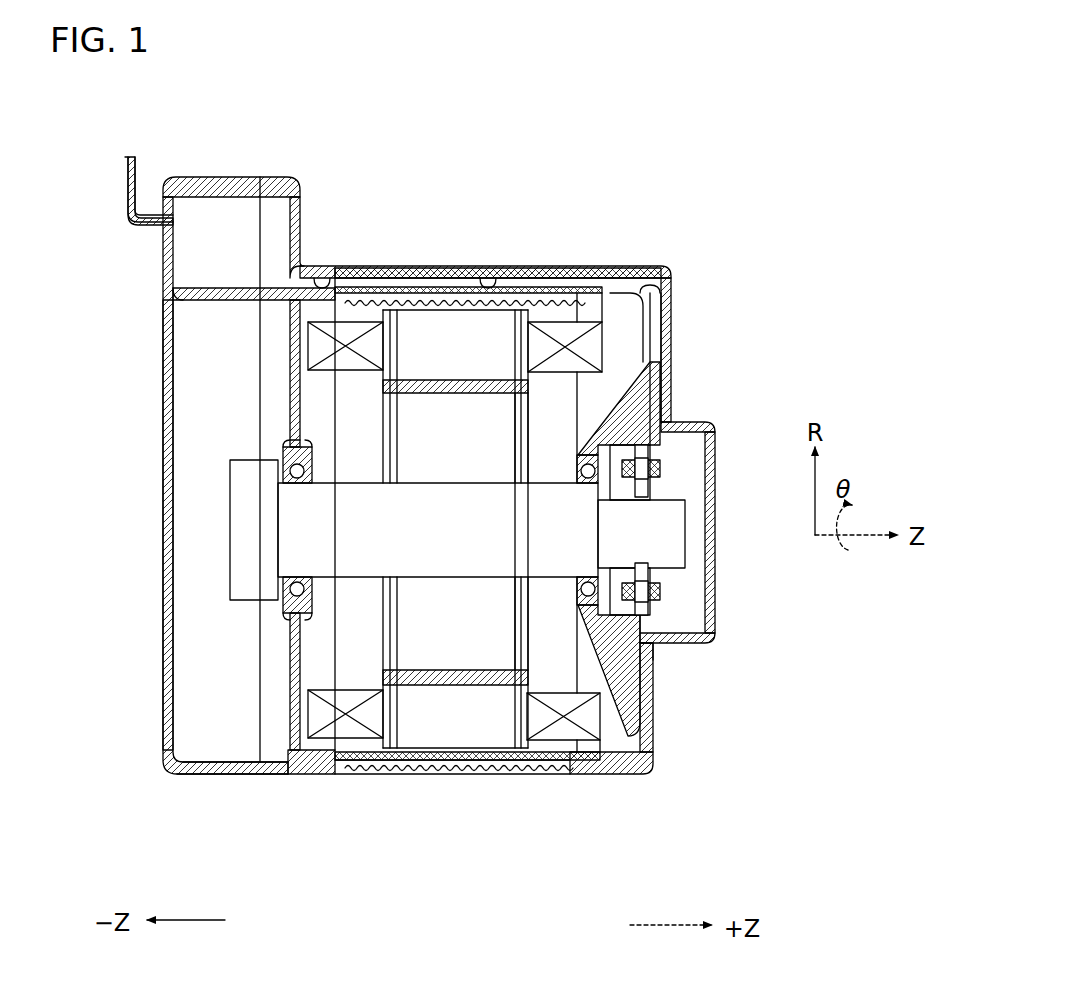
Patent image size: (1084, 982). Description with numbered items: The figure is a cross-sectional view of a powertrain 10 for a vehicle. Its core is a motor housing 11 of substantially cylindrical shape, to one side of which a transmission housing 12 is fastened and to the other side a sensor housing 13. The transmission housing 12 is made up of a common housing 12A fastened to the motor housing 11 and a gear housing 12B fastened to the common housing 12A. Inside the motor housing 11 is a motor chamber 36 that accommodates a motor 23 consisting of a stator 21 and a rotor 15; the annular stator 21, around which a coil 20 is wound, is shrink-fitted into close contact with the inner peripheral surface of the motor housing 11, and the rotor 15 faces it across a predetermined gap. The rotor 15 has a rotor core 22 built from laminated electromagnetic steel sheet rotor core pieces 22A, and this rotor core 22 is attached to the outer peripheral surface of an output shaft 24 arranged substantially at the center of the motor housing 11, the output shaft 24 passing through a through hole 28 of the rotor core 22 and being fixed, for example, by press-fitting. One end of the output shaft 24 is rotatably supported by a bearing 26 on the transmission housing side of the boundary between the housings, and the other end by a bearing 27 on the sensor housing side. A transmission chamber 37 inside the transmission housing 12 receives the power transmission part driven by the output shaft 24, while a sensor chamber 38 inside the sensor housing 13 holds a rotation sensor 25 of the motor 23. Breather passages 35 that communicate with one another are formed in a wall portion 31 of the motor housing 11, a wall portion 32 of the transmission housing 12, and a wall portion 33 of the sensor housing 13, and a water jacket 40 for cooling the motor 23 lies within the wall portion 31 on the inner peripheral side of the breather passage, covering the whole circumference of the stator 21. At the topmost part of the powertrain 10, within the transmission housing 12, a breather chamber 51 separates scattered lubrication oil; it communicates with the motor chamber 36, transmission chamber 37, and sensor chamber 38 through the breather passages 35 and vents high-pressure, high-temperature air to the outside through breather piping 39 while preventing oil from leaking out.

The powertrain 10 is at (710, 182).
The motor housing 11 is at (358, 270).
The transmission housing 12 is at (160, 400).
The common housing 12A is at (272, 775).
The gear housing 12B is at (160, 624).
The sensor housing 13 is at (672, 276).
The rotor 15 is at (372, 665).
The coil 20 is at (577, 333).
The stator 21 is at (452, 330).
The rotor core 22 is at (422, 653).
The rotor core pieces 22A is at (497, 682).
The motor 23 is at (548, 401).
The output shaft 24 is at (300, 530).
The rotation sensor 25 is at (642, 450).
The bearing 26 is at (278, 592).
The bearing 27 is at (655, 650).
The through hole 28 is at (578, 615).
The wall portion 31 is at (410, 266).
The wall portion 32 is at (297, 223).
The wall portion 33 is at (642, 268).
The breather passages 35 is at (320, 278).
The motor chamber 36 is at (557, 417).
The transmission chamber 37 is at (197, 492).
The sensor chamber 38 is at (693, 538).
The breather piping 39 is at (125, 175).
The water jacket 40 is at (547, 285).
The breather chamber 51 is at (218, 213).